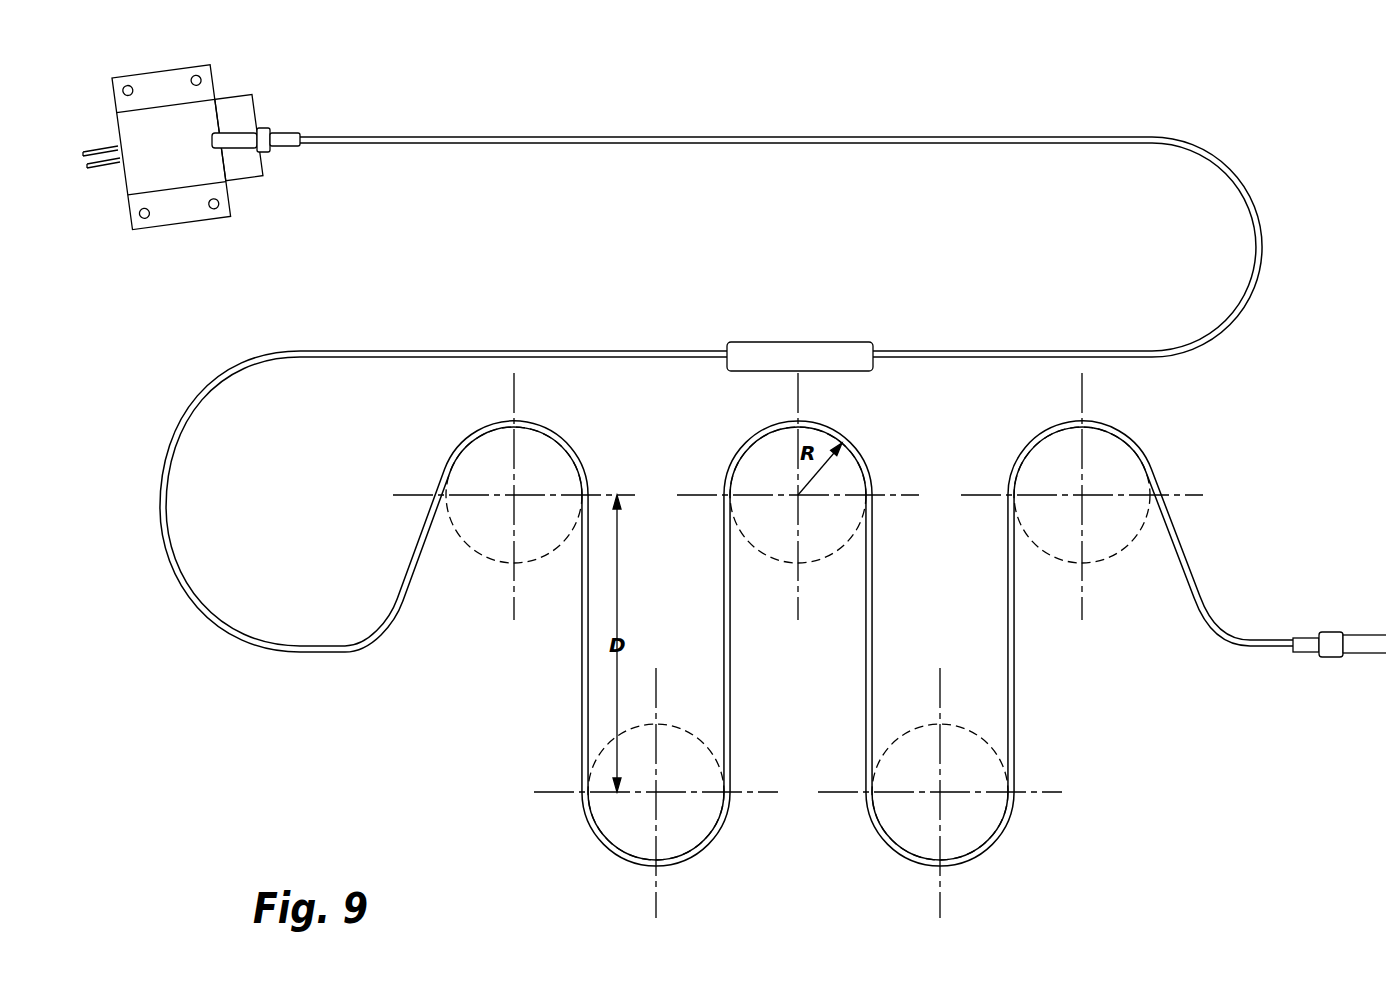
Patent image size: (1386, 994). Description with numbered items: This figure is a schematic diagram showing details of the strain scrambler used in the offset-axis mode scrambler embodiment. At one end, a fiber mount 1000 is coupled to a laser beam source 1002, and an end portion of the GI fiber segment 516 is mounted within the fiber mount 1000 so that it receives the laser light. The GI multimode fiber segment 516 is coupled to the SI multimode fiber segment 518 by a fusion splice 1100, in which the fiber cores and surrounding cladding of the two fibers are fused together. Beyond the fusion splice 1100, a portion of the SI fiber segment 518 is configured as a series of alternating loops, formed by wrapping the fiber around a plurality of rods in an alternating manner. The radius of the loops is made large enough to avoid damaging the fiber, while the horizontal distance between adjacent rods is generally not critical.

The fiber mount 1000 is at (186, 251).
The GI fiber segment 516 is at (940, 138).
The SI fiber segment 518 is at (300, 356).
The fusion splice 1100 is at (810, 305).
The laser beam source 1002 is at (1115, 552).